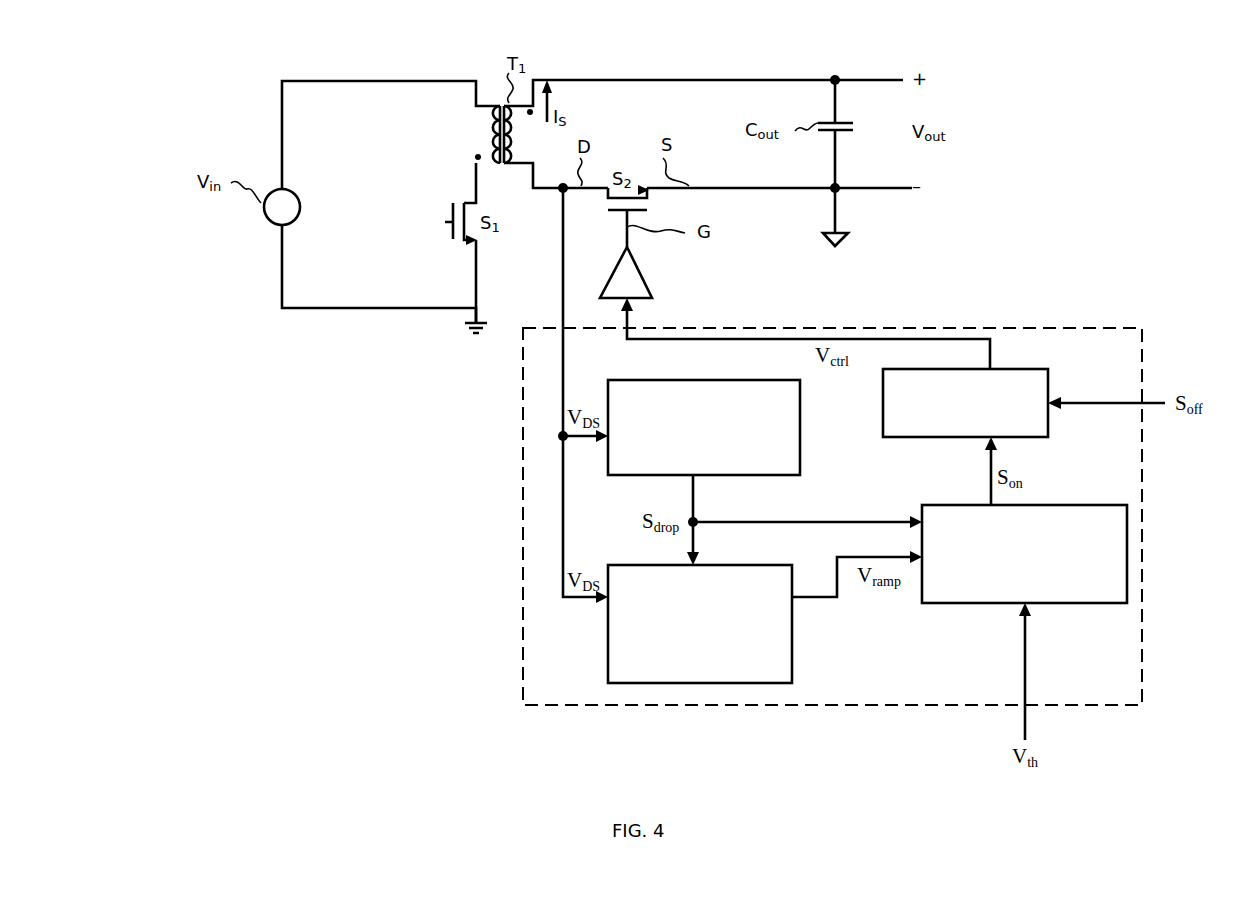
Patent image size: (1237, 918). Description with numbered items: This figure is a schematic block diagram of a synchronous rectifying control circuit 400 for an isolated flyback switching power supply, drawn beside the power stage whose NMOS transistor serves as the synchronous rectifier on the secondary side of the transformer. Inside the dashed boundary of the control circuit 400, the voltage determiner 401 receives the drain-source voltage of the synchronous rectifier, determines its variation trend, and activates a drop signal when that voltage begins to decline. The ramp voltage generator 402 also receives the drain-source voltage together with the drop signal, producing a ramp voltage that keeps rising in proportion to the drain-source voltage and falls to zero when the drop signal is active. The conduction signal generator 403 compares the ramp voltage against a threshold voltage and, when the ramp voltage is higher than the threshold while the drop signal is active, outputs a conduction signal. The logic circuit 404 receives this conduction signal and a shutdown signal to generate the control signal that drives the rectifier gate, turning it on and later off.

The synchronous rectifying control circuit 400 is at (777, 705).
The voltage determiner 401 is at (704, 427).
The ramp voltage generator 402 is at (700, 624).
The conduction signal generator 403 is at (1024, 554).
The logic circuit 404 is at (965, 403).